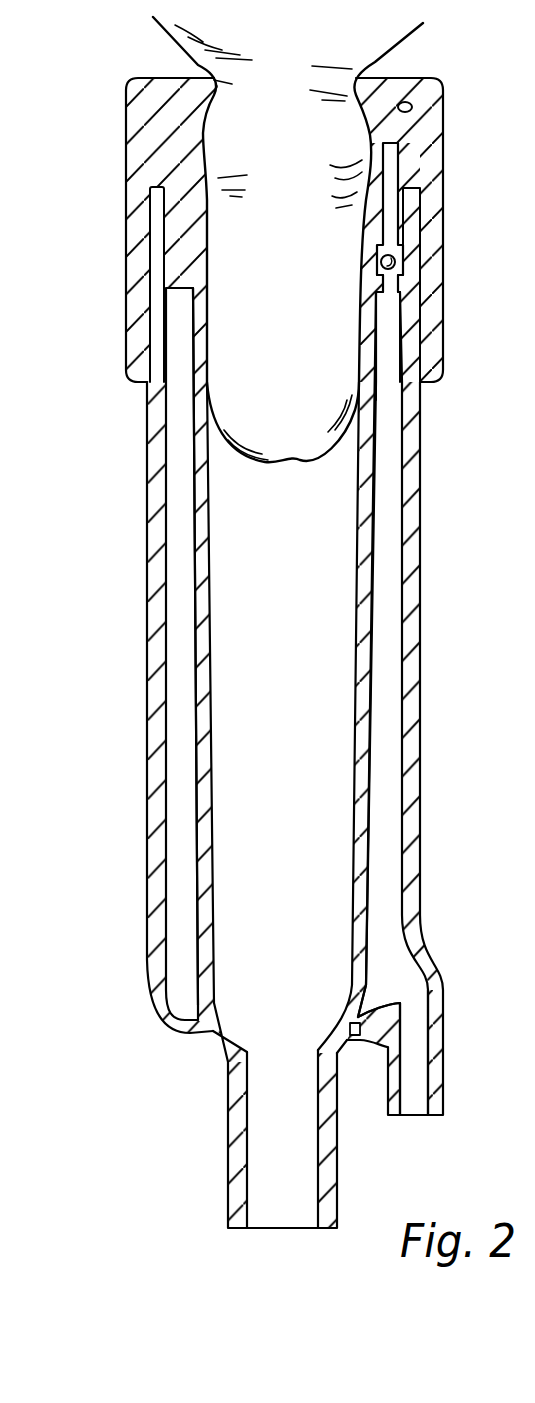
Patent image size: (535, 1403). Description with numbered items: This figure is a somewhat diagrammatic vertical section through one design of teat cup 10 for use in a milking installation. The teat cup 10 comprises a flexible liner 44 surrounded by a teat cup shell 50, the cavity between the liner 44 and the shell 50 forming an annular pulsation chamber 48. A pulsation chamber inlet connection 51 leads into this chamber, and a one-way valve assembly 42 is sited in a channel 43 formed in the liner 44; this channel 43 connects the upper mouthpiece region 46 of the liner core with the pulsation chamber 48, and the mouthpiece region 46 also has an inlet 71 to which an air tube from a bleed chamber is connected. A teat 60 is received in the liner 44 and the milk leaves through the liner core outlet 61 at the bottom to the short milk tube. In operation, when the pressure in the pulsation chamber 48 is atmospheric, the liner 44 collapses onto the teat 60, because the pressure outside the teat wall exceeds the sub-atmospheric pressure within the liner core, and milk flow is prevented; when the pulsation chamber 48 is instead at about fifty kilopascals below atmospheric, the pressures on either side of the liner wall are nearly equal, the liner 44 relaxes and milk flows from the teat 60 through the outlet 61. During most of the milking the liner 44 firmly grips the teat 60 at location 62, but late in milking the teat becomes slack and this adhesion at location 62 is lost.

The teat cup 10 is at (121, 535).
The one-way valve assembly 42 is at (402, 262).
The channel 43 is at (392, 182).
The liner 44 is at (365, 668).
The upper mouthpiece region 46 is at (412, 108).
The annular pulsation chamber 48 is at (388, 741).
The teat cup shell 50 is at (422, 484).
The pulsation chamber inlet connection 51 is at (444, 1084).
The teat 60 is at (301, 313).
The liner core outlet 61 is at (240, 1185).
The location of adhesion 62 is at (386, 340).
The inlet of the mouthpiece region 71 is at (392, 288).